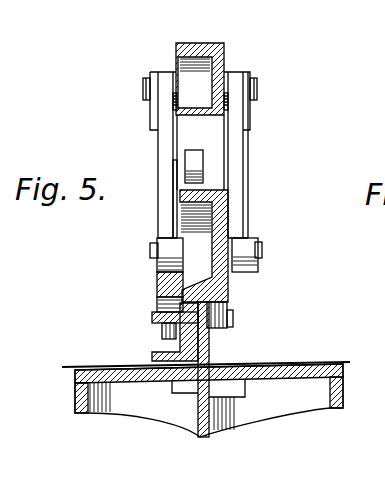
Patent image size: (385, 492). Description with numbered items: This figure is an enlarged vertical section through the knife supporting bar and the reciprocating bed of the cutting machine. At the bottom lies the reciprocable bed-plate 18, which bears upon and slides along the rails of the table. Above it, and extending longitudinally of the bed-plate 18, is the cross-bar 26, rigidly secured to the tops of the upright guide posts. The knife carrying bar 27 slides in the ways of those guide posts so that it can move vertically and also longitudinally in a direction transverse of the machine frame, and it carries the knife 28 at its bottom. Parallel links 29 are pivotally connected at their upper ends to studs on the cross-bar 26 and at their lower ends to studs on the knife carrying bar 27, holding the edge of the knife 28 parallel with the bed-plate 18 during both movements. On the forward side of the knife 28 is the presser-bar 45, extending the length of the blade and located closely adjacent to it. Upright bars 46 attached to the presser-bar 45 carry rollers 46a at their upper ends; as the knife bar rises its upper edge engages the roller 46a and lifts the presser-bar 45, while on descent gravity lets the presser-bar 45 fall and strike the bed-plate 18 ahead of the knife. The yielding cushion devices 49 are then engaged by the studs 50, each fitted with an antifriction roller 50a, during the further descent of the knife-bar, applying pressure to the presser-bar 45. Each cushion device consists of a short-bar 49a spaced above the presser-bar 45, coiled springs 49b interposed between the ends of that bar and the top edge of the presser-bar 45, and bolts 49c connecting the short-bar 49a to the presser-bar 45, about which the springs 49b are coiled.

The reciprocable bed-plate 18 is at (343, 378).
The cross-bar 26 is at (196, 43).
The knife carrying bar 27 is at (229, 198).
The knife 28 is at (221, 342).
The parallel links 29 is at (165, 207).
The presser-bar 45 is at (155, 355).
The upright bars 46 is at (175, 172).
The rollers 46a is at (195, 160).
The yielding cushion devices 49 is at (145, 298).
The short-bar 49a is at (220, 292).
The coiled springs 49b is at (156, 306).
The bolts 49c is at (152, 320).
The studs 50 is at (156, 279).
The antifriction roller 50a is at (156, 274).